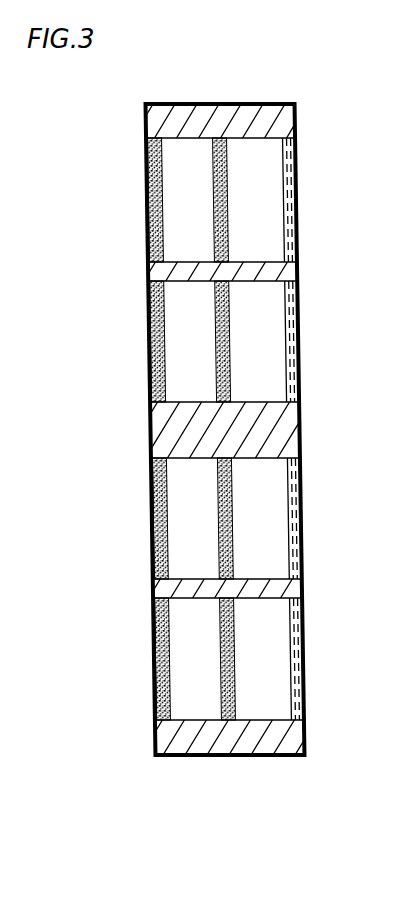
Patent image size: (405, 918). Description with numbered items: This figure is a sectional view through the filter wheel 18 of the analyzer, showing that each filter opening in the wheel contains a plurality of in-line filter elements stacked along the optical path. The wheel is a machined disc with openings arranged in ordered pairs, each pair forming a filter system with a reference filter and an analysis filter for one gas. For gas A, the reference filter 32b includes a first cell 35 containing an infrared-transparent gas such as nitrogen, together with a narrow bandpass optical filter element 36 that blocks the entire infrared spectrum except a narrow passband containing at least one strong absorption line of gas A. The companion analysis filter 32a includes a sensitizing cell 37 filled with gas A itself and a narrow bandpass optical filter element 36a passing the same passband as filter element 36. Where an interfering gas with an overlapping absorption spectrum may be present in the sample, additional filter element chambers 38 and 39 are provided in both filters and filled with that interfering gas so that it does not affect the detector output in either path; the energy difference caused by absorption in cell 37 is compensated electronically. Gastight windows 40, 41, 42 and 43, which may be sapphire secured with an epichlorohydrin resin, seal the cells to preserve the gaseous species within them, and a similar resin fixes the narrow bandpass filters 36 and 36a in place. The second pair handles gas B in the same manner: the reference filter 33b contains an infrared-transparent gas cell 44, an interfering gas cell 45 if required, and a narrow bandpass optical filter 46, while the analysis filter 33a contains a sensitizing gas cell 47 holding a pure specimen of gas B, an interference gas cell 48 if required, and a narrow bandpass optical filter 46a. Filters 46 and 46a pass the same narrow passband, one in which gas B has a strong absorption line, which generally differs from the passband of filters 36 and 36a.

The filter wheel 18 is at (268, 761).
The sensitizing gas cell 47 is at (172, 163).
The analysis filter 33a is at (137, 239).
The interference gas cell 48 is at (267, 160).
The narrow bandpass optical filter 46a is at (285, 237).
The reference filter 33b is at (139, 344).
The infrared-transparent gas cell 44 is at (173, 370).
The interfering gas cell 45 is at (267, 375).
The narrow bandpass optical filter 46 is at (292, 313).
The gastight window 42 is at (225, 460).
The sensitizing cell 37 is at (175, 482).
The analysis filter 32a is at (143, 535).
The gastight window 43 is at (157, 555).
The filter element chamber 38 is at (270, 477).
The narrow bandpass optical filter element 36a is at (302, 548).
The reference filter 32b is at (144, 645).
The gastight window 41 is at (157, 679).
The first cell 35 is at (178, 700).
The filter element chamber 39 is at (282, 697).
The narrow bandpass optical filter element 36 is at (302, 627).
The gastight window 40 is at (230, 717).